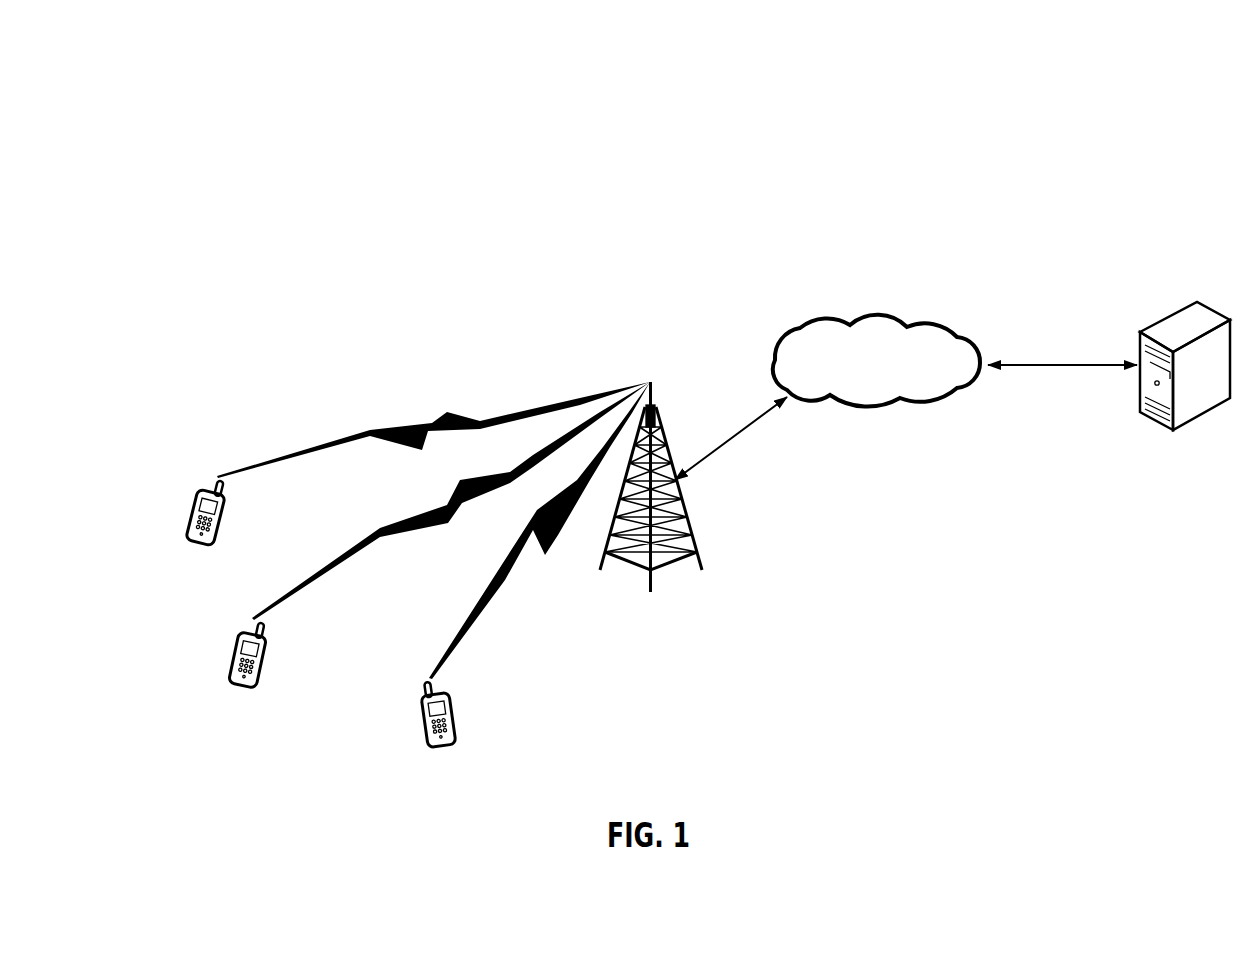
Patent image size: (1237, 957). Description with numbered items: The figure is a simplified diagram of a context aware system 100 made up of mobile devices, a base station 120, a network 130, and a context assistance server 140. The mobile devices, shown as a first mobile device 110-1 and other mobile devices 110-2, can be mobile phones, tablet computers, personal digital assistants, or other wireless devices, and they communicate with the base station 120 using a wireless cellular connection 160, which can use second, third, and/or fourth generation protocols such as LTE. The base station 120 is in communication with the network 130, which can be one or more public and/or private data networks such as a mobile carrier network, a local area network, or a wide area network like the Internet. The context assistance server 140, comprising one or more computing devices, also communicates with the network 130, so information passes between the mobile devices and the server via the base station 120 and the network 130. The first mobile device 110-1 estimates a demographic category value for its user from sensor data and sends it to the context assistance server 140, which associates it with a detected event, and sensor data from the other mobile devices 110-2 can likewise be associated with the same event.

The context aware system 100 is at (292, 96).
The first mobile device 110-1 is at (422, 735).
The other mobile devices 110-2 is at (221, 527).
The base station 120 is at (640, 575).
The network 130 is at (768, 372).
The context assistance server 140 is at (1160, 320).
The wireless cellular connection 160 is at (478, 605).